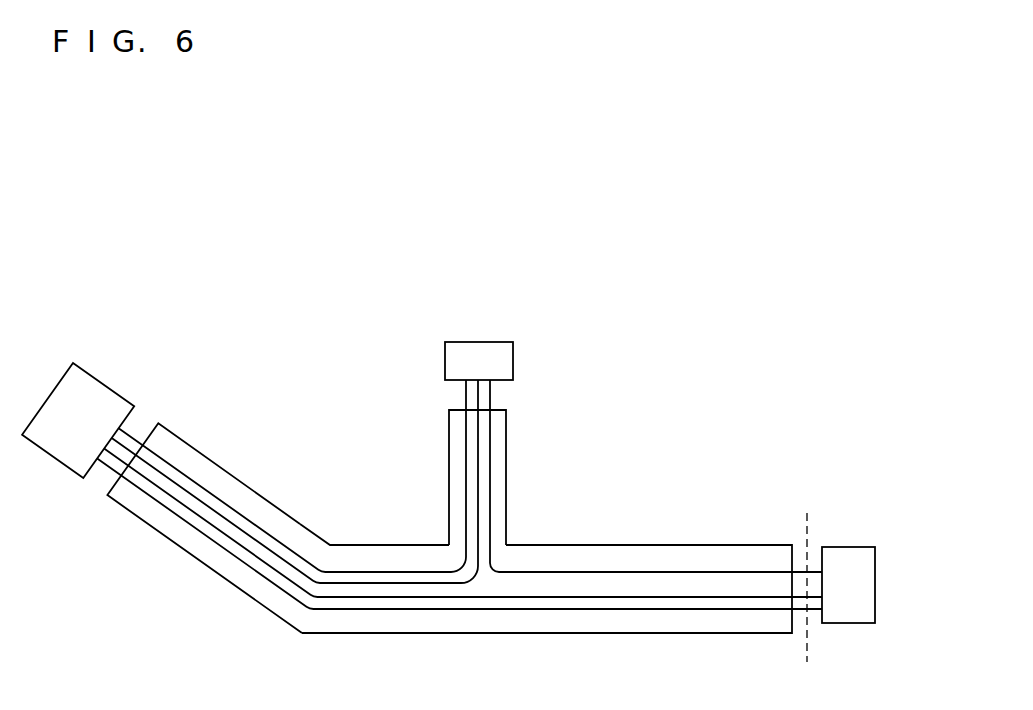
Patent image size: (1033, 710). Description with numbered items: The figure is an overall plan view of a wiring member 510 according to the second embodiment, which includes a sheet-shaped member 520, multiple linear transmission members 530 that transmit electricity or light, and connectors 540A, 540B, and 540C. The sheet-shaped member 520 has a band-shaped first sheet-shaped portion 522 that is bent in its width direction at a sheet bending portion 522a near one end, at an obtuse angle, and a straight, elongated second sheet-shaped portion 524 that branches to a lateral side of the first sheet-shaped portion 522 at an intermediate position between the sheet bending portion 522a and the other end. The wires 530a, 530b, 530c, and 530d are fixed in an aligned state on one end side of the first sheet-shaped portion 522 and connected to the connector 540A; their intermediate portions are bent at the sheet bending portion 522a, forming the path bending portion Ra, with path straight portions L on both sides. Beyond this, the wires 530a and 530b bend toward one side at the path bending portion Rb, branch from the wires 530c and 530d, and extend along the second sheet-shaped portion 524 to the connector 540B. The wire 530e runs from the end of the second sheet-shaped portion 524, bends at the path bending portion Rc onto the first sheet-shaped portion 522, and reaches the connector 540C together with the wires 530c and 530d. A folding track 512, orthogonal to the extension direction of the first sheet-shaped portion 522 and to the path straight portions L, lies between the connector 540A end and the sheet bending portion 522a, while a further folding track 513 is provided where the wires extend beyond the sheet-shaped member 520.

The wiring member 510 is at (437, 435).
The folding track 512 is at (220, 553).
The folding track 513 is at (808, 613).
The sheet-shaped member 520 is at (623, 634).
The first sheet-shaped portion 522 is at (718, 634).
The sheet bending portion 522a is at (333, 541).
The second sheet-shaped portion 524 is at (508, 493).
The linear transmission member 530 is at (368, 610).
The wire 530a is at (166, 461).
The wire 530b is at (200, 499).
The wire 530c is at (141, 477).
The wire 530d is at (183, 519).
The wire 530e is at (601, 571).
The connector 540A is at (98, 381).
The connector 540B is at (515, 362).
The connector 540C is at (847, 547).
The path straight portion L is at (282, 589).
The path bending portion Ra is at (320, 570).
The path bending portion Rb is at (473, 577).
The path bending portion Rc is at (493, 569).